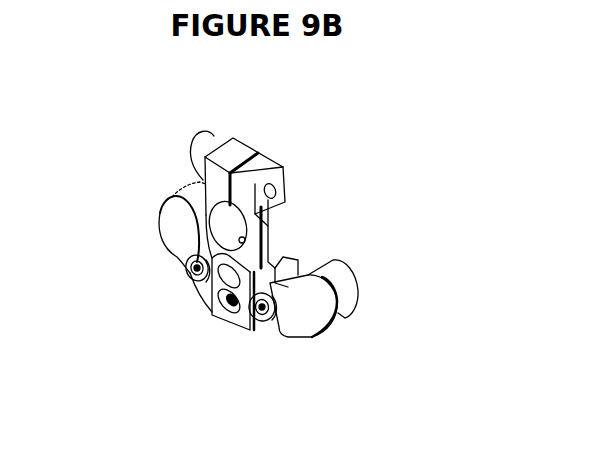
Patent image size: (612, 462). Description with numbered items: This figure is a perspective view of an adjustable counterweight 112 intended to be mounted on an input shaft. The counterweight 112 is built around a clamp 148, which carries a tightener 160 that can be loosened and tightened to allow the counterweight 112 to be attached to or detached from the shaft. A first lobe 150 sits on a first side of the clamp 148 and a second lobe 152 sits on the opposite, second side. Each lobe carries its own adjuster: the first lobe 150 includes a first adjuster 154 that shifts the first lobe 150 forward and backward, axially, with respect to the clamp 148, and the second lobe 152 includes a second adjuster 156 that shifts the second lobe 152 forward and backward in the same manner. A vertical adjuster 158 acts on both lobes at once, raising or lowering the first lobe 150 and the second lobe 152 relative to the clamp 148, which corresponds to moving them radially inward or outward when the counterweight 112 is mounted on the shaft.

The counterweight 112 is at (366, 151).
The clamp 148 is at (275, 153).
The first lobe 150 is at (165, 215).
The second lobe 152 is at (352, 283).
The first adjuster 154 is at (187, 270).
The second adjuster 156 is at (262, 324).
The vertical adjuster 158 is at (213, 312).
The tightener 160 is at (204, 139).